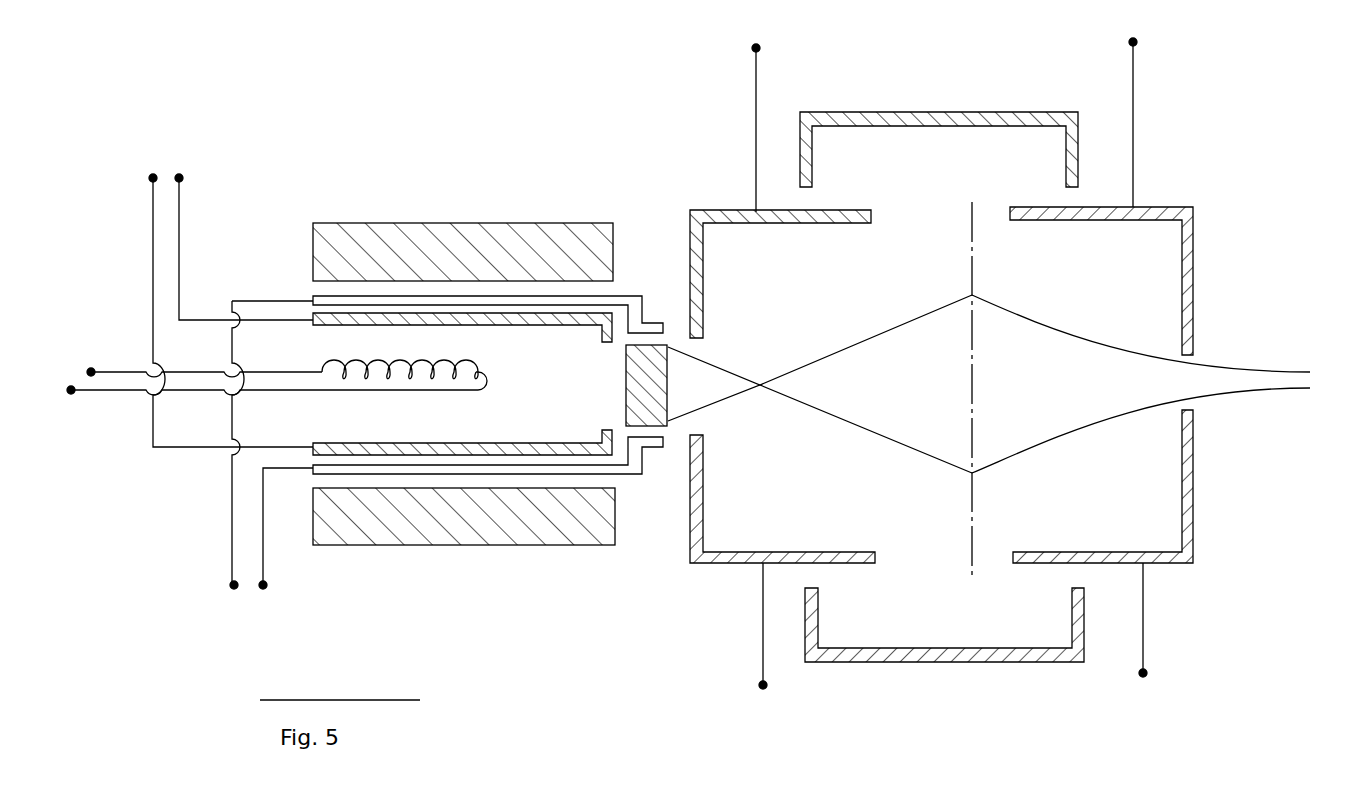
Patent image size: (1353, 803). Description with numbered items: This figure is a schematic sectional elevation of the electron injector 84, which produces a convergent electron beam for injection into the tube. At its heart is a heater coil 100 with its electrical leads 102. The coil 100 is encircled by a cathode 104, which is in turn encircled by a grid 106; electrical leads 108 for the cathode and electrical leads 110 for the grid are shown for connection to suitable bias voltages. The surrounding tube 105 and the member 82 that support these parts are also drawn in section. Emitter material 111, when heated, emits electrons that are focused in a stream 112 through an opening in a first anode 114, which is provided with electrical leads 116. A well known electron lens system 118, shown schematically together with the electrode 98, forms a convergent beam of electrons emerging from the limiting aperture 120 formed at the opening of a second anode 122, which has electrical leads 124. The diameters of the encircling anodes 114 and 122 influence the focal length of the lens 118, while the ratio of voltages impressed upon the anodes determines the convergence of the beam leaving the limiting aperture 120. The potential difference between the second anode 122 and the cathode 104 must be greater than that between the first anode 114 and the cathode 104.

The cathode support tube 82 is at (446, 326).
The electron injector 84 is at (621, 128).
The upper deflection electrode 98 is at (964, 104).
The heater coil 100 is at (359, 362).
The electrical leads 102 is at (70, 383).
The cathode 104 is at (416, 444).
The upper outer tube 105 is at (495, 298).
The grid 106 is at (556, 470).
The electrical leads for the cathode 108 is at (176, 168).
The electrical leads for the grid 110 is at (260, 598).
The emitter material 111 is at (652, 418).
The stream of electrons 112 is at (835, 346).
The first anode 114 is at (727, 210).
The electrical leads 116 is at (757, 95).
The electron lens system 118 is at (973, 668).
The limiting aperture 120 is at (1215, 362).
The second anode 122 is at (1194, 250).
The electrical leads 124 is at (1137, 92).